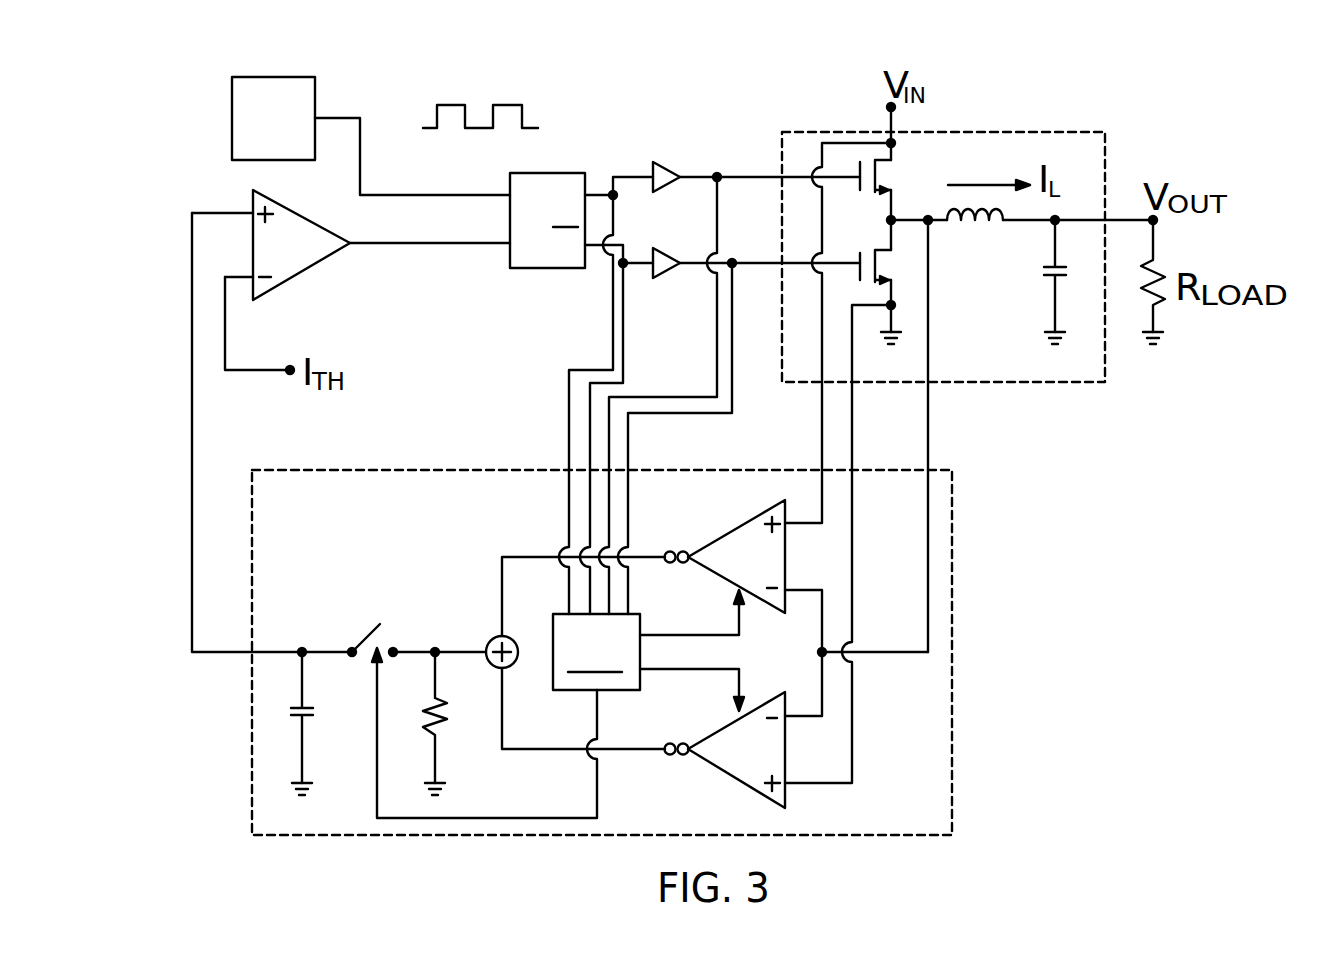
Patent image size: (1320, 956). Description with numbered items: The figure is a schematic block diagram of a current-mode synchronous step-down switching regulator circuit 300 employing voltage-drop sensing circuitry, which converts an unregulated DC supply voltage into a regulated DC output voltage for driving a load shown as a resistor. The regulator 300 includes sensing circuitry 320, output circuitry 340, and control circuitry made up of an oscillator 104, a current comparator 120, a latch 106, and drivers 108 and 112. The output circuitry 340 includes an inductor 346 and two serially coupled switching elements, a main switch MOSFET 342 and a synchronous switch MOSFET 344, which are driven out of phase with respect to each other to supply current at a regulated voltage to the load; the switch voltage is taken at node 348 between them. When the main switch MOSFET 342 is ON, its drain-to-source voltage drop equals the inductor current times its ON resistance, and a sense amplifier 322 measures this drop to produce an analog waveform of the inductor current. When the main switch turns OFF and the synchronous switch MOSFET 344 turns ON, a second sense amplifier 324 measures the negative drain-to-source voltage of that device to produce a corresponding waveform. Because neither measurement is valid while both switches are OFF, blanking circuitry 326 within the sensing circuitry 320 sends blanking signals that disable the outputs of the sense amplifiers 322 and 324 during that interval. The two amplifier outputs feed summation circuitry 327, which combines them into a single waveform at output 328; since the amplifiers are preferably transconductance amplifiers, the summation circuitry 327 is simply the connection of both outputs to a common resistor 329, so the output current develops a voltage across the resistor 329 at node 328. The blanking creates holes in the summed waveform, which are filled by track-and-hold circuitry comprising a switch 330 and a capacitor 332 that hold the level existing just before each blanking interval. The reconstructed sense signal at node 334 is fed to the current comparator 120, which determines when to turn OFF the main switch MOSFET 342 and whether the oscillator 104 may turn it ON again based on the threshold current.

The oscillator 104 is at (315, 95).
The latch 106 is at (545, 268).
The driver 108 is at (665, 162).
The driver 112 is at (682, 231).
The current comparator 120 is at (323, 270).
The current-mode synchronous step-down switching regulator circuit 300 is at (1180, 120).
The V_DS sensing circuitry 320 is at (952, 668).
The sense amplifier 322 is at (728, 530).
The sense amplifier 324 is at (728, 775).
The blanking circuitry 326 is at (596, 652).
The summation circuitry 327 is at (513, 665).
The output 328 is at (436, 646).
The common resistor 329 is at (447, 727).
The switch 330 is at (365, 640).
The capacitor 332 is at (308, 714).
The node 334 is at (304, 648).
The output circuitry 340 is at (1068, 382).
The main switch MOSFET 342 is at (882, 178).
The synchronous switch MOSFET 344 is at (886, 249).
The inductor 346 is at (987, 226).
The node 348 is at (933, 223).